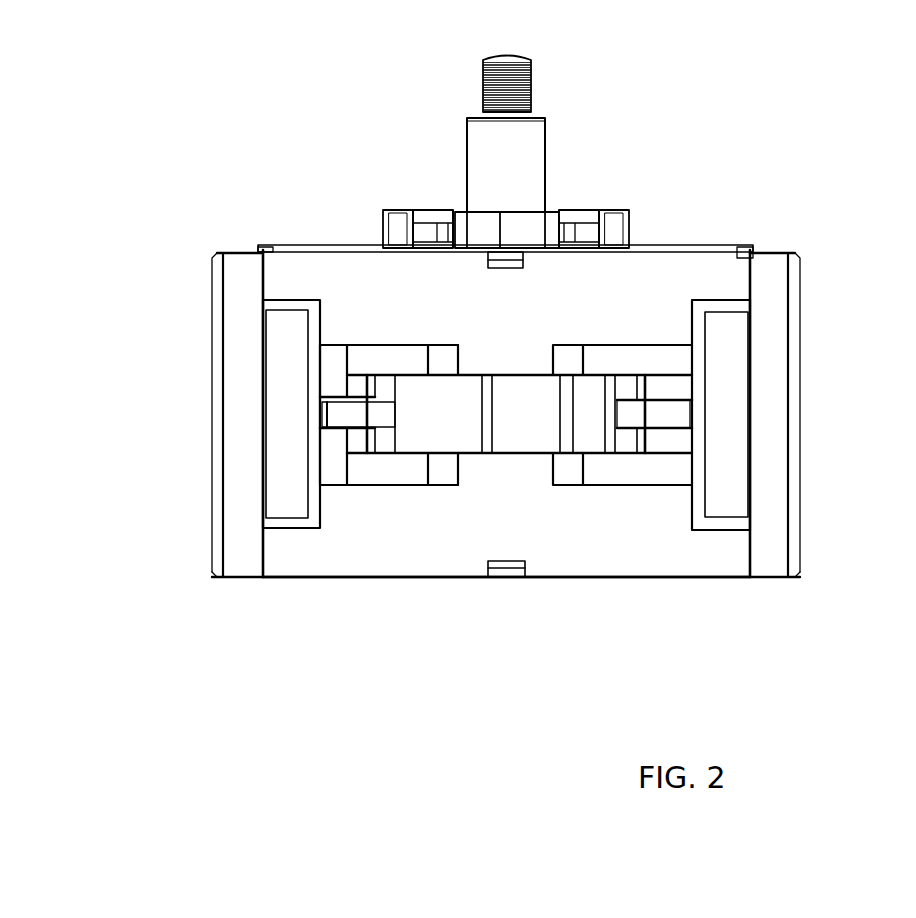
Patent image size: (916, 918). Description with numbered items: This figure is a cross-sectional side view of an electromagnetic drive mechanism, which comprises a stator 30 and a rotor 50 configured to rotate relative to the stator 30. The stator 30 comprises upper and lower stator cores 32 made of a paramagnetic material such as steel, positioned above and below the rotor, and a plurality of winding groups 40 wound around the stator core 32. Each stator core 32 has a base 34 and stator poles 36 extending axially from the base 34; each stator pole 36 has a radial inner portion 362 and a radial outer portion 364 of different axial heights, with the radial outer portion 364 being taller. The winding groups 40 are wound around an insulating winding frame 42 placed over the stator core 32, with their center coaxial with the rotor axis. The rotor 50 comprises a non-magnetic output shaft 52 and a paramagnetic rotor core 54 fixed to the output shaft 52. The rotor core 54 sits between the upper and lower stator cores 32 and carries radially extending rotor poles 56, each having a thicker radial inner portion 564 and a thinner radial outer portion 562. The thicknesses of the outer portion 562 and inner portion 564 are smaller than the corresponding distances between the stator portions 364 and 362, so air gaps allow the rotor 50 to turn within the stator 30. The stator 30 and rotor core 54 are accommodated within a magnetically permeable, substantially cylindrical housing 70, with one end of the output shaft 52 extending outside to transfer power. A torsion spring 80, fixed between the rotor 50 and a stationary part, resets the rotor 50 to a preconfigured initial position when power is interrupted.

The stator 30 is at (538, 282).
The stator core 32 is at (590, 263).
The base 34 is at (422, 520).
The stator poles 36 is at (393, 526).
The radial inner portion 362 is at (403, 447).
The radial outer portion 364 is at (348, 430).
The winding groups 40 is at (288, 452).
The winding frame 42 is at (308, 390).
The rotor 50 is at (460, 364).
The output shaft 52 is at (490, 148).
The rotor core 54 is at (578, 400).
The rotor poles 56 is at (367, 315).
The radial outer portion 562 is at (412, 380).
The radial inner portion 564 is at (352, 400).
The housing 70 is at (245, 507).
The torsion spring 80 is at (440, 213).